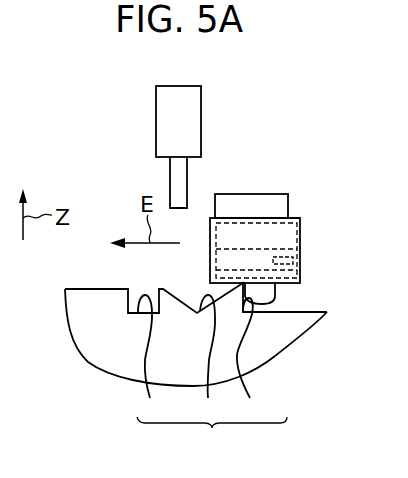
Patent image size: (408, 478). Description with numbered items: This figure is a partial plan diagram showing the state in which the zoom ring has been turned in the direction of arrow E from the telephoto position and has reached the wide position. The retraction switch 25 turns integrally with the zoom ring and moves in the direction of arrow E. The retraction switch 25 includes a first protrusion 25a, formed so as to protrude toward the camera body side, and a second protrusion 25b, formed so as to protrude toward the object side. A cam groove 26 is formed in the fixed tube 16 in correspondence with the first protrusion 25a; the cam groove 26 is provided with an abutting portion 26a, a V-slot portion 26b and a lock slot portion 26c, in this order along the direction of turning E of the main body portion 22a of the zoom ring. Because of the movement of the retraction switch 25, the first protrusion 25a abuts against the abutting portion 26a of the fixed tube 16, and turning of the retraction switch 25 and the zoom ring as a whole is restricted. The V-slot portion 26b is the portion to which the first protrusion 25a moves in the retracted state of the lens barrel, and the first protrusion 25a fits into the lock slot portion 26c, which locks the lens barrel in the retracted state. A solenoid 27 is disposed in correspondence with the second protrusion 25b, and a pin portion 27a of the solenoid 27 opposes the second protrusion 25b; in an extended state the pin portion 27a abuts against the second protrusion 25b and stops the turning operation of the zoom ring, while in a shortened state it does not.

The fixed tube 16 is at (72, 338).
The arm portion 22a is at (290, 218).
The retraction switch 25 is at (320, 241).
The first protrusion 25a is at (278, 301).
The second protrusion 25b is at (257, 201).
The cam groove 26 is at (212, 437).
The abutting portion 26a is at (245, 383).
The V-slot portion 26b is at (208, 383).
The lock slot portion 26c is at (144, 383).
The solenoid 27 is at (190, 115).
The pin portion 27a is at (176, 170).